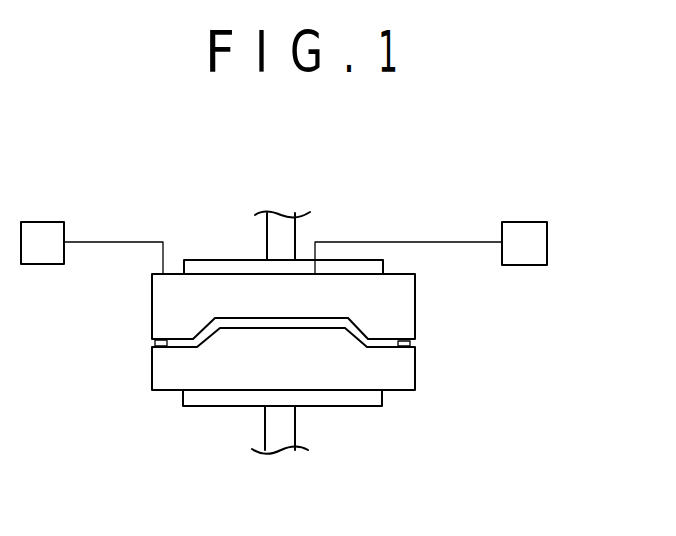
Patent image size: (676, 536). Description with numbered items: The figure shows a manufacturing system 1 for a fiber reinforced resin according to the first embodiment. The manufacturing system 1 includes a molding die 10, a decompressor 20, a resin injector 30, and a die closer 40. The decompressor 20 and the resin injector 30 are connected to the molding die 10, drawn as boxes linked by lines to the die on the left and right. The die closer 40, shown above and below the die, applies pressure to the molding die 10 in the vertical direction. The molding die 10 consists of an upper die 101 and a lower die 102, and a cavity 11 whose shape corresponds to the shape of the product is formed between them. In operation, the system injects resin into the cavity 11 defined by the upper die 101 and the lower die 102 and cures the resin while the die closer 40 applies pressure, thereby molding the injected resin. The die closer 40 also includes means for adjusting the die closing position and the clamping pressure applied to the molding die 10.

The manufacturing system 1 is at (432, 173).
The molding die 10 is at (496, 310).
The upper die 101 is at (403, 313).
The lower die 102 is at (403, 370).
The cavity 11 is at (322, 323).
The decompressor 20 is at (45, 258).
The resin injector 30 is at (538, 247).
The die closer 40 is at (222, 250).